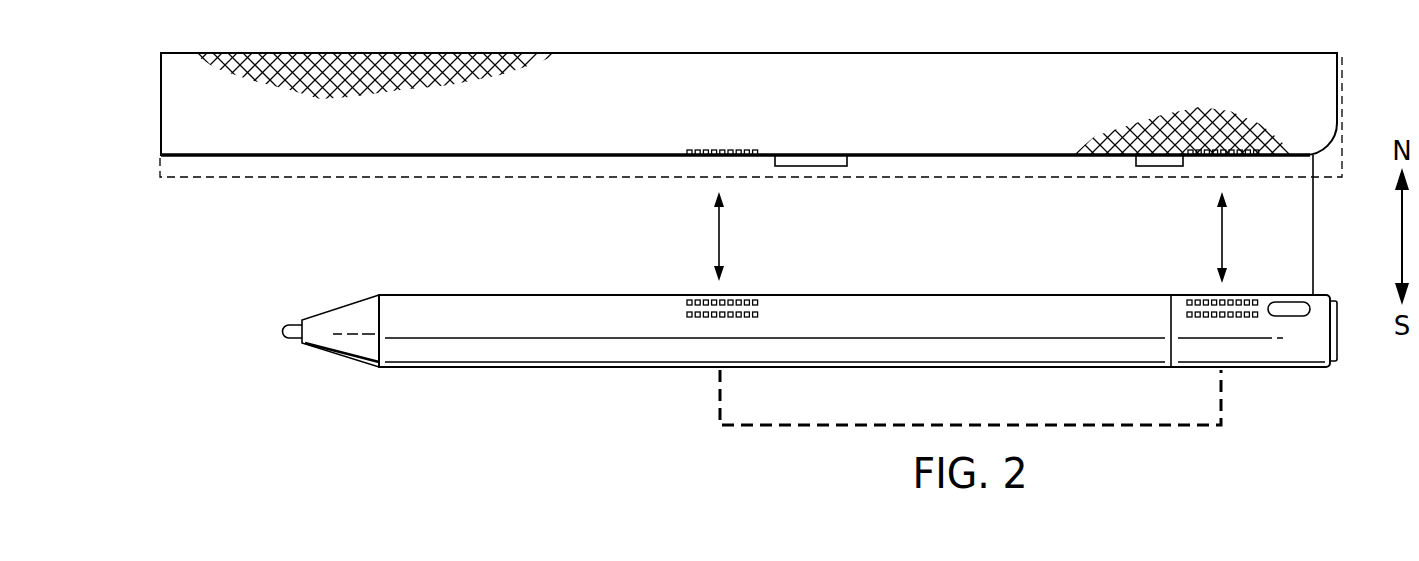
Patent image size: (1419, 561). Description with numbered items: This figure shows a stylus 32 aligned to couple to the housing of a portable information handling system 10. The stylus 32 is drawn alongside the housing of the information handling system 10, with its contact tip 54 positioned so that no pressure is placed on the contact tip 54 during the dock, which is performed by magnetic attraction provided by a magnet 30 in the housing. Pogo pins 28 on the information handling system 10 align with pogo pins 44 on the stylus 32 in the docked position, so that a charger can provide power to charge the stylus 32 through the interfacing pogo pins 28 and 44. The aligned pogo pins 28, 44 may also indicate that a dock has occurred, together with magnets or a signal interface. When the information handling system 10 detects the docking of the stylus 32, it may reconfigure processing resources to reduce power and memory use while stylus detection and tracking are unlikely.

The information handling system 10 is at (1341, 118).
The pogo pins 28 is at (697, 157).
The magnet 30 is at (810, 166).
The stylus 32 is at (1267, 371).
The pogo pins 44 is at (697, 297).
The contact tip 54 is at (285, 342).